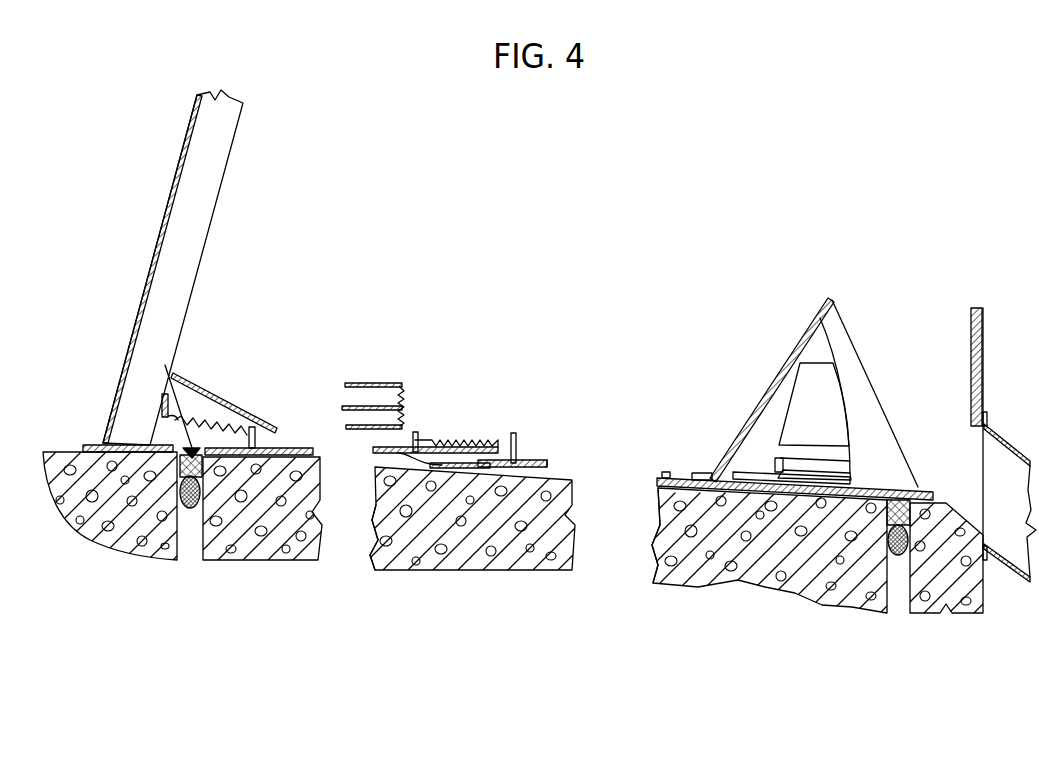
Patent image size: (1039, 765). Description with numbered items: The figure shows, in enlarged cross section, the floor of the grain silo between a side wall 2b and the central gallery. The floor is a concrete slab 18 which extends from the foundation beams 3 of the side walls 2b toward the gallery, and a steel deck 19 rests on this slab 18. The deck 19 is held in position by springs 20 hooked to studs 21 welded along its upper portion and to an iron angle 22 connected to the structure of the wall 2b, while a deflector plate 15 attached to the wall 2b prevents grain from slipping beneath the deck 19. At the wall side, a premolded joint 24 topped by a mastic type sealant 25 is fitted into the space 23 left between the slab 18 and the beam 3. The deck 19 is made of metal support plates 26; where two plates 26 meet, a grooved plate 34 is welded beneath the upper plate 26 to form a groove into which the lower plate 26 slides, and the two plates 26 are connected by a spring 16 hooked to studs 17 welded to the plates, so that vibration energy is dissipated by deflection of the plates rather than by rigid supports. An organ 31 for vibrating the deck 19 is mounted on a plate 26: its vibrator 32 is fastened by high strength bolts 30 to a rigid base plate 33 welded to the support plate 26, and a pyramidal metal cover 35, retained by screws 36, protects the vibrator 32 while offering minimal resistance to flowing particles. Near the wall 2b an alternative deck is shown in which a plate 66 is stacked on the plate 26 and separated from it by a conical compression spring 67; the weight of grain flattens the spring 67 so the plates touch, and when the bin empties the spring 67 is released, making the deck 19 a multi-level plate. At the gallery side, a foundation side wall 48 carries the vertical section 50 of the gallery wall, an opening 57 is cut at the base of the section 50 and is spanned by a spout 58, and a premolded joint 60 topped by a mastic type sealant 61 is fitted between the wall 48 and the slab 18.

The side wall 2b is at (185, 222).
The foundation beam 3 is at (137, 522).
The deflector plate 15 is at (225, 398).
The spring 16 is at (444, 438).
The stud 17 is at (520, 458).
The concrete slab 18 is at (262, 530).
The steel deck 19 is at (552, 465).
The spring 20 is at (228, 425).
The stud 21 is at (260, 440).
The iron angle 22 is at (171, 406).
The space 23 is at (187, 545).
The premolded joint 24 is at (186, 488).
The mastic type sealant 25 is at (189, 455).
The metal support plate 26 is at (380, 456).
The high strength bolt 30 is at (776, 462).
The organ 31 is at (797, 312).
The vibrator 32 is at (822, 403).
The rigid base plate 33 is at (838, 486).
The grooved plate 34 is at (440, 463).
The metal cover 35 is at (838, 342).
The screw 36 is at (700, 473).
The foundation side wall 48 is at (928, 579).
The vertical section 50 is at (972, 345).
The opening 57 is at (1000, 494).
The spout 58 is at (1010, 442).
The premolded joint 60 is at (884, 560).
The mastic type sealant 61 is at (890, 510).
The plate 66 is at (360, 418).
The conical compression spring 67 is at (405, 421).